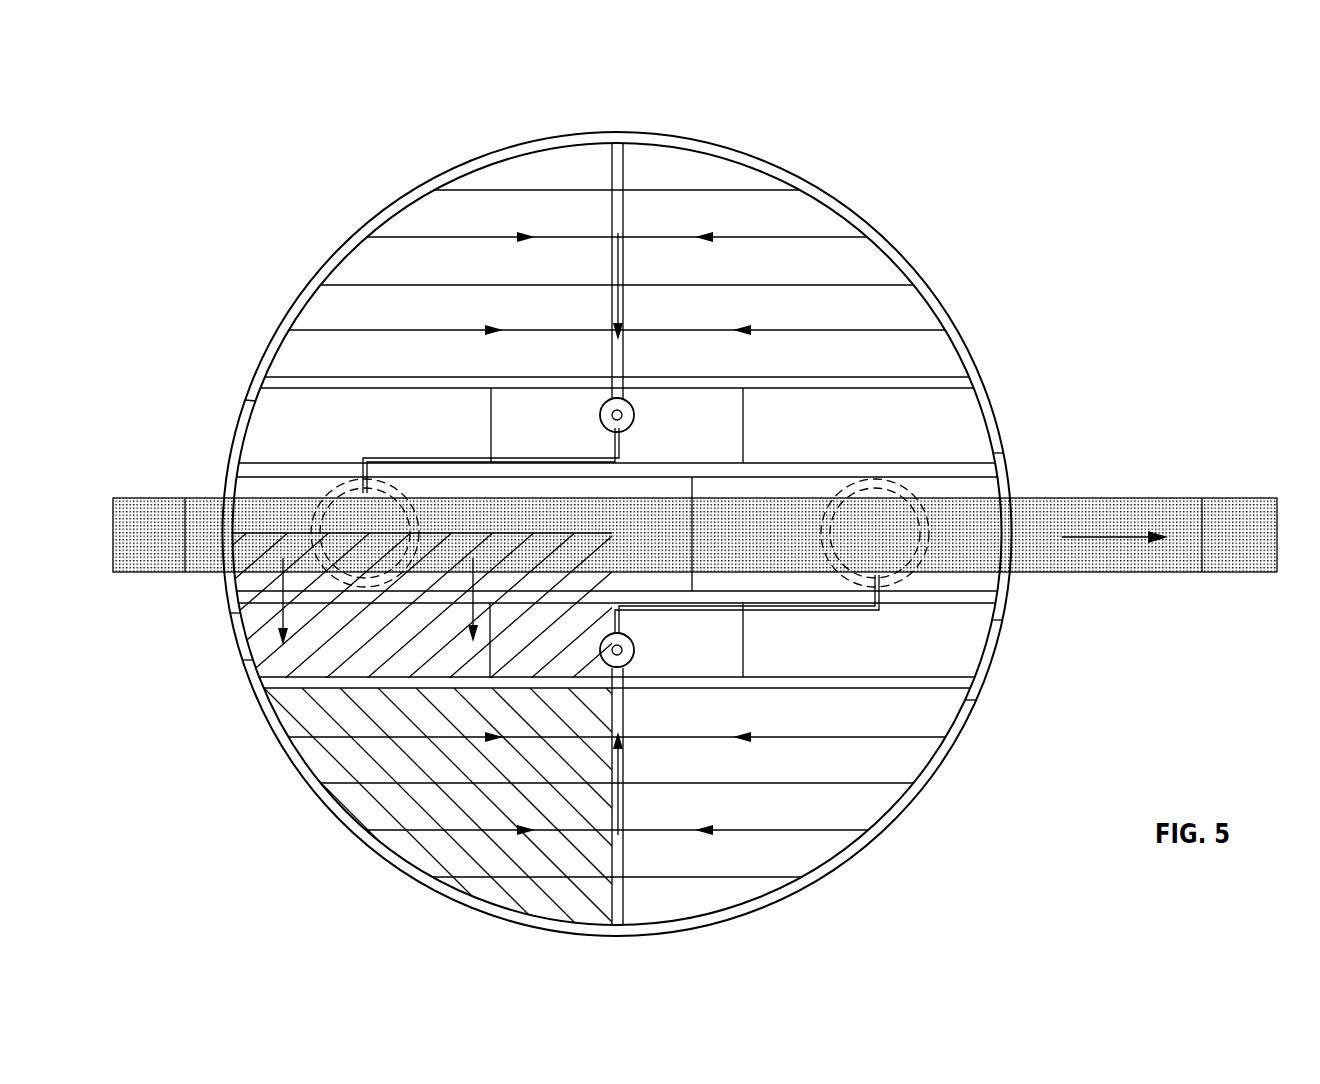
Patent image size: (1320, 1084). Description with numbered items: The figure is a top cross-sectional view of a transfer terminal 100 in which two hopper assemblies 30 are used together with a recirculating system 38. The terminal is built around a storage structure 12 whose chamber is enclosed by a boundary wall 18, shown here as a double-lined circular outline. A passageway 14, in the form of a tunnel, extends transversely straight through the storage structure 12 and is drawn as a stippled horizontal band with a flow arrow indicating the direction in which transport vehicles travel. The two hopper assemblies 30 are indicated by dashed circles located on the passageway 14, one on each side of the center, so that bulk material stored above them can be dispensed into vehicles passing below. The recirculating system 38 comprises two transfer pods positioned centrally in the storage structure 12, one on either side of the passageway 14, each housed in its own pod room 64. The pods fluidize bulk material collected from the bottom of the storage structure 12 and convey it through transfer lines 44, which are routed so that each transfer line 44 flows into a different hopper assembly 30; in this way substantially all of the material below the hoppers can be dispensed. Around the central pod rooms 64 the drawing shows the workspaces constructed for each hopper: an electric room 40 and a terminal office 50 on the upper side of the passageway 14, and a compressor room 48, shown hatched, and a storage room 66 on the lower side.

The underwater vessel system 100 is at (1015, 326).
The storage structure 12 is at (833, 195).
The boundary wall 18 is at (768, 168).
The passageway 14 is at (978, 525).
The hopper assembly 30 is at (308, 482).
The recirculating system 38 is at (590, 398).
The transfer line 44 is at (455, 458).
The electric room 40 is at (302, 441).
The pod room 64 is at (700, 443).
The terminal office 50 is at (955, 443).
The compressor room 48 is at (432, 670).
The storage room 66 is at (948, 655).